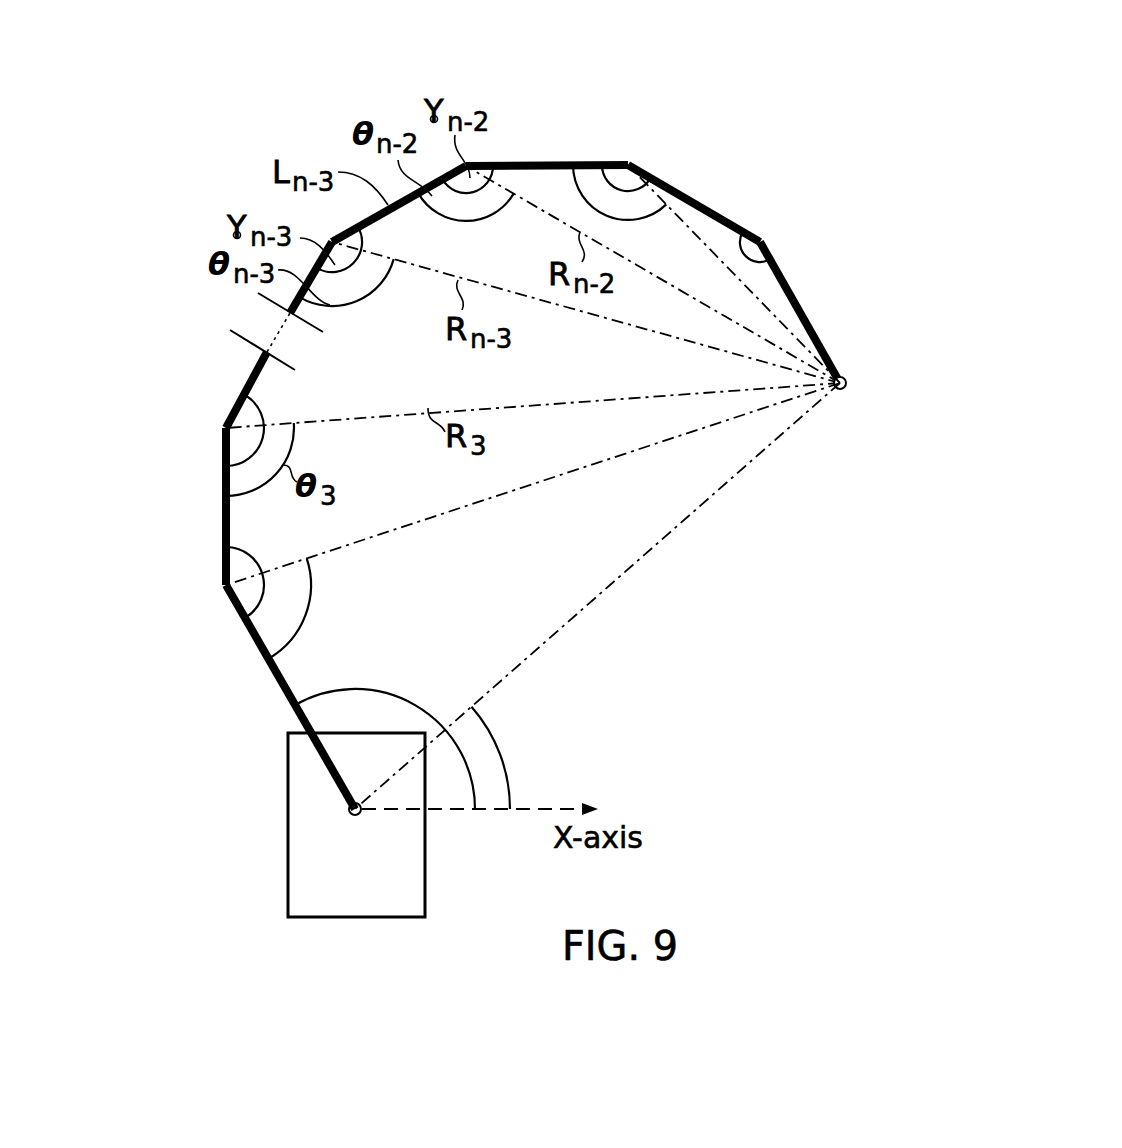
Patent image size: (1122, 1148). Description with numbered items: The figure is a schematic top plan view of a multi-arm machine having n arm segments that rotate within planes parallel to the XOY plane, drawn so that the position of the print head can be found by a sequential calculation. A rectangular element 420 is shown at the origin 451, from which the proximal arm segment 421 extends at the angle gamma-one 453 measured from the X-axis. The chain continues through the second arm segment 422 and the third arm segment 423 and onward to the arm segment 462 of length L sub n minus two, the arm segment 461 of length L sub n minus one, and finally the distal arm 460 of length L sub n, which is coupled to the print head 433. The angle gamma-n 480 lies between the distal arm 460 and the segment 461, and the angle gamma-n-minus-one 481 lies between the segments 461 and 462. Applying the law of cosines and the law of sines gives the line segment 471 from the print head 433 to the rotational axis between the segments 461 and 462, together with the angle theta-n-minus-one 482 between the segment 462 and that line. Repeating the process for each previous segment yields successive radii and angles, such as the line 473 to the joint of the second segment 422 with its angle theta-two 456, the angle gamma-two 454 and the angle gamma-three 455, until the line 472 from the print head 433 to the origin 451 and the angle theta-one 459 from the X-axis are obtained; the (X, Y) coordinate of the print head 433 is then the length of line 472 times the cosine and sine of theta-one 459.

The base / robot body 420 is at (382, 904).
The proximal arm segment 421 is at (165, 702).
The second link L2 422 is at (135, 527).
The third link L3 423 is at (175, 372).
The printhead 433 is at (847, 388).
The origin 451 is at (349, 810).
The angle gamma 1 453 is at (452, 673).
The angle gamma 2 454 is at (135, 606).
The angle gamma 3 455 is at (145, 439).
The angle theta 2 456 is at (312, 583).
The angle theta 1 459 is at (500, 743).
The distal arm segment 460 is at (815, 328).
The arm segment of length Ln-1 461 is at (733, 220).
The arm segment of length Ln-2 462 is at (502, 70).
The line segment Rn-1 471 is at (688, 232).
The line R1 472 is at (605, 618).
The radius R2 473 is at (490, 493).
The angle gamma n 480 is at (772, 248).
The angle gamma n-1 481 is at (807, 112).
The angle theta n-1 482 is at (671, 131).